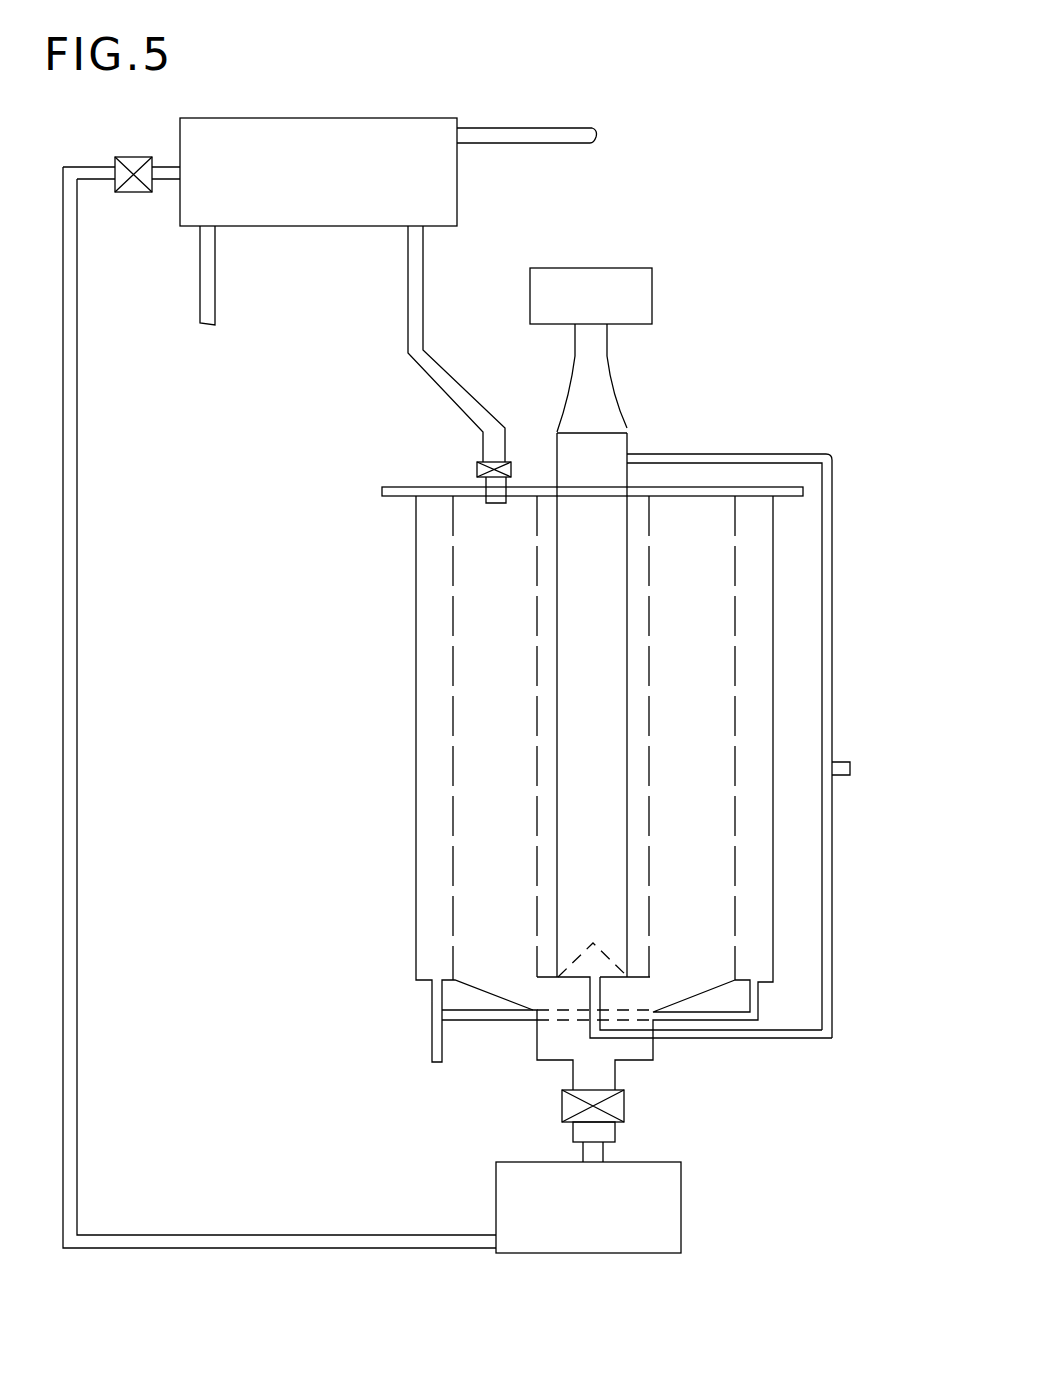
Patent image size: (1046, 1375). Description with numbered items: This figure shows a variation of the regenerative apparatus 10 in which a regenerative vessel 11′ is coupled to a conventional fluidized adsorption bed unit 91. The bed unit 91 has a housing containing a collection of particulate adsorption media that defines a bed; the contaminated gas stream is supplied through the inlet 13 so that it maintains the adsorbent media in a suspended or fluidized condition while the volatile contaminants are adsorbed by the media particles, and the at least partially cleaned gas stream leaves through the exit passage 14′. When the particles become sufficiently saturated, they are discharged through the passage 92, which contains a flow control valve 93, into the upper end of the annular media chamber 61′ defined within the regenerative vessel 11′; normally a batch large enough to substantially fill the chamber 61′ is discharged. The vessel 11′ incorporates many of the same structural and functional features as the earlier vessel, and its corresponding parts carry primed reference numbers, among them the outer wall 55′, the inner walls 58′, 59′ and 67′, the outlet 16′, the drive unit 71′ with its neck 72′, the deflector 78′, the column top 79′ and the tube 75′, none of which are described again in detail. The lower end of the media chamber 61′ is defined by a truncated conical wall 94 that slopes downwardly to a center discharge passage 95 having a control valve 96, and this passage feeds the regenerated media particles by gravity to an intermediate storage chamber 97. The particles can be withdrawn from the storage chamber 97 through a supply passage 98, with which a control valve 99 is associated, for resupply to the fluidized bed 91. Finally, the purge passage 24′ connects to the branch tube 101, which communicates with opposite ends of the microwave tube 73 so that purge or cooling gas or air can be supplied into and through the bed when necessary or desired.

The apparatus 10 is at (630, 48).
The regenerative vessel 11′ is at (372, 560).
The inlet 13 is at (200, 305).
The exit passage 14′ is at (533, 132).
The outlet pipe 16′ is at (430, 1042).
The purge passage 24′ is at (840, 768).
The vessel wall 55′ is at (416, 757).
The inner wall 58′ is at (735, 690).
The inner wall 59′ is at (649, 785).
The annular media chamber 61′ is at (512, 832).
The inner wall 67′ is at (416, 665).
The drive unit 71′ is at (652, 295).
The neck 72′ is at (610, 385).
The microwave tube 73 is at (557, 706).
The tube 75′ is at (627, 608).
The deflector 78′ is at (600, 948).
The column top 79′ is at (608, 433).
The fluidized adsorption bed 91 is at (447, 193).
The passage 92 is at (408, 300).
The flow control valve 93 is at (476, 470).
The truncated conical wall 94 is at (494, 992).
The center discharge passage 95 is at (615, 1073).
The control valve 96 is at (616, 1110).
The intermediate storage chamber 97 is at (681, 1240).
The supply passage 98 is at (78, 670).
The control valve 99 is at (136, 193).
The branch tube 101 is at (832, 608).